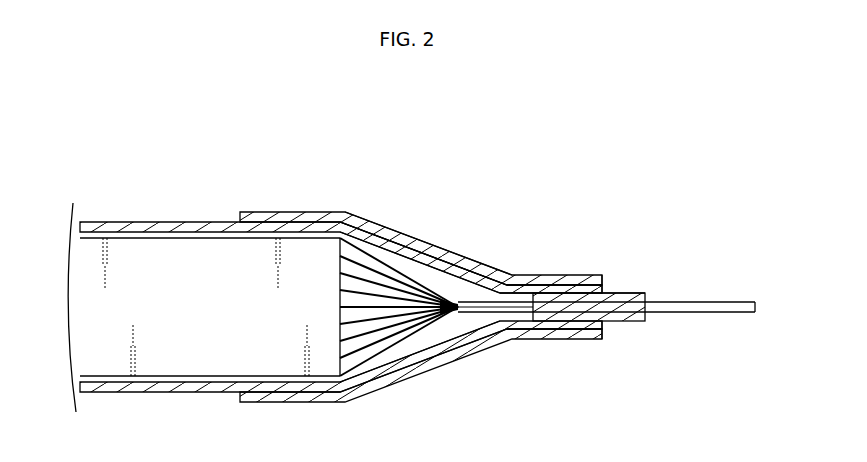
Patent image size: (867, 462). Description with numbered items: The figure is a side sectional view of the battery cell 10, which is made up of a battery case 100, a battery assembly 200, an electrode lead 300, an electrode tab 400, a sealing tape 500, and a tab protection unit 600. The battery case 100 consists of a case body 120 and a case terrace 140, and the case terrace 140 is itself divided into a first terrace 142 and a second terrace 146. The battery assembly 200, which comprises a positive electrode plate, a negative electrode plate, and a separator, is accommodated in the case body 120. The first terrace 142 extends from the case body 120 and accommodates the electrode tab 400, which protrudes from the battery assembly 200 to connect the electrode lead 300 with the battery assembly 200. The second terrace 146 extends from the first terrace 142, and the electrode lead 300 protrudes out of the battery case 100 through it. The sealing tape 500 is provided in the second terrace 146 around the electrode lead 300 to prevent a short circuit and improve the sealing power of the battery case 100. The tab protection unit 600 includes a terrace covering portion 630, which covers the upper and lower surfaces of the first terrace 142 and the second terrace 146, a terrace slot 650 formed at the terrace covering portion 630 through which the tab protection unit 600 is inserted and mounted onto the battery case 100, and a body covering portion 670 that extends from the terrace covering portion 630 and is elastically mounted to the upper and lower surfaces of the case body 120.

The battery cell 10 is at (158, 143).
The battery case 100 is at (130, 410).
The case body 120 is at (173, 390).
The case terrace 140 is at (616, 338).
The first terrace 142 is at (412, 253).
The second terrace 146 is at (557, 288).
The battery assembly 200 is at (163, 258).
The electrode lead 300 is at (708, 302).
The electrode tab 400 is at (389, 358).
The sealing tape 500 is at (635, 295).
The tab protection unit 600 is at (441, 382).
The terrace covering portion 630 is at (458, 262).
The terrace slot 650 is at (601, 288).
The body covering portion 670 is at (283, 212).